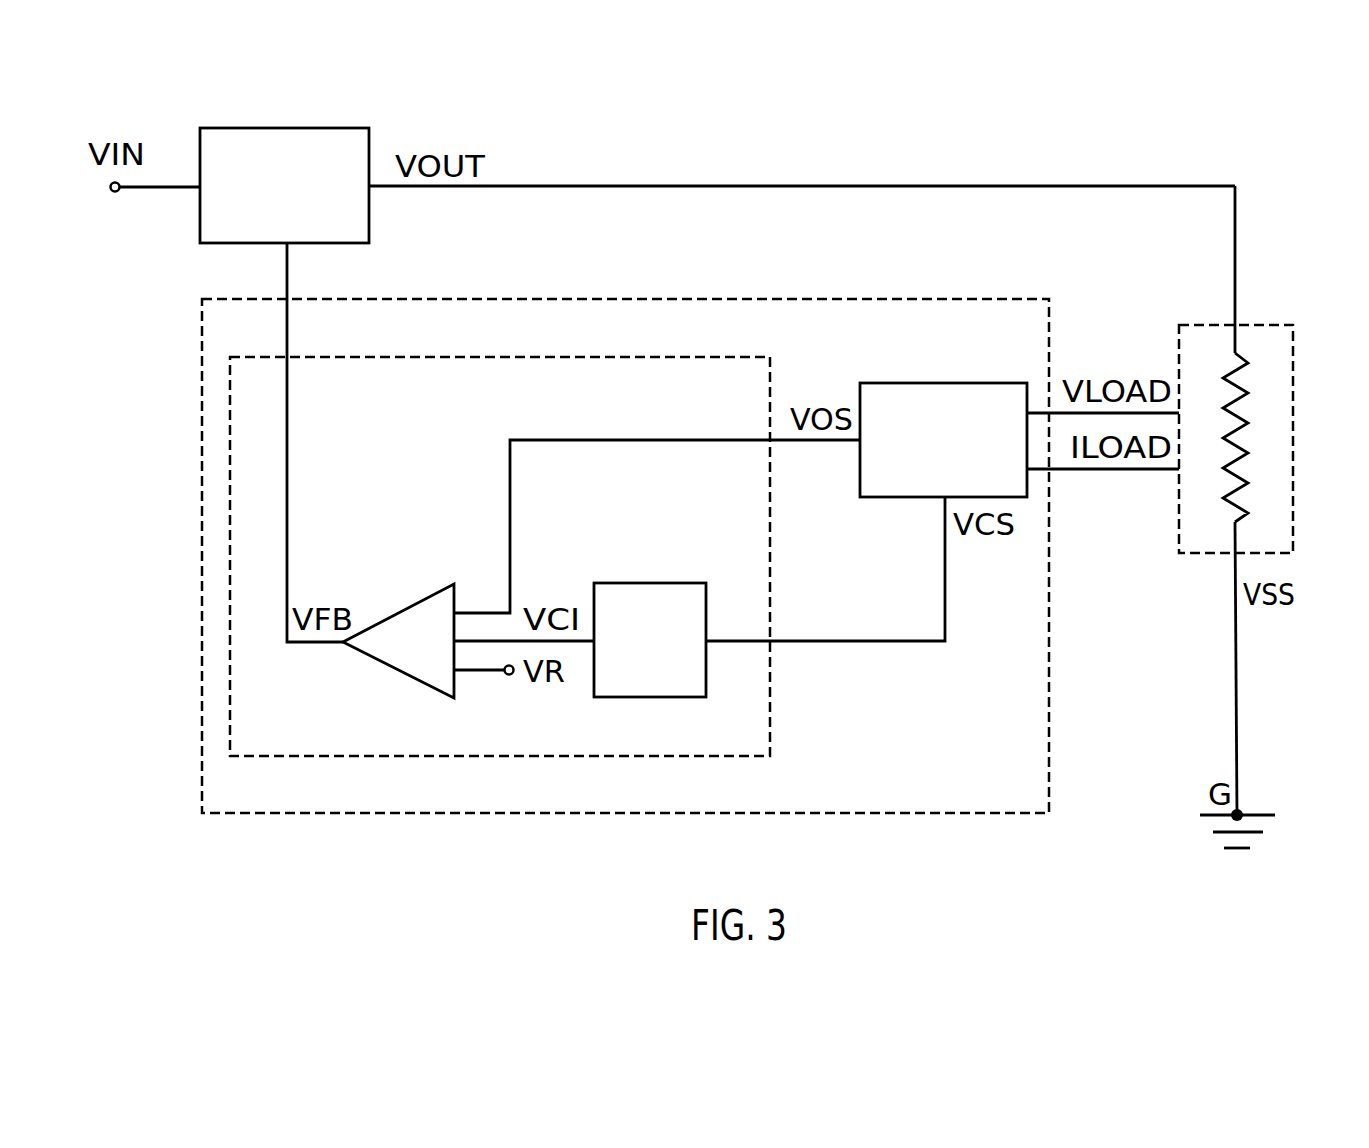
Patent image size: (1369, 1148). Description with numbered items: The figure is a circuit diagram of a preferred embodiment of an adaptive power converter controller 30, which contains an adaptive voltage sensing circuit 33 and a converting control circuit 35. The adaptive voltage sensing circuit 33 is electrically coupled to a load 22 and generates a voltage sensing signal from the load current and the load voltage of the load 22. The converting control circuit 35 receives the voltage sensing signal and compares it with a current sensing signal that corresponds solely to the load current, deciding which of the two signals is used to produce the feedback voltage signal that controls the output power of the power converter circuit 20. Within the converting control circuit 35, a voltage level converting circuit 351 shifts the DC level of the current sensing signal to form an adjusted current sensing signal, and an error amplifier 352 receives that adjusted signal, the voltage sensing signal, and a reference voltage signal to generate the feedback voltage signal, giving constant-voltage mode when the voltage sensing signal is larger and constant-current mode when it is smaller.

The power converter circuit 20 is at (352, 128).
The load 22 is at (1272, 325).
The adaptive power converter controller 30 is at (1030, 298).
The adaptive voltage sensing circuit 33 is at (952, 383).
The converting control circuit 35 is at (755, 356).
The voltage level converting circuit 351 is at (650, 583).
The error amplifier 352 is at (372, 600).